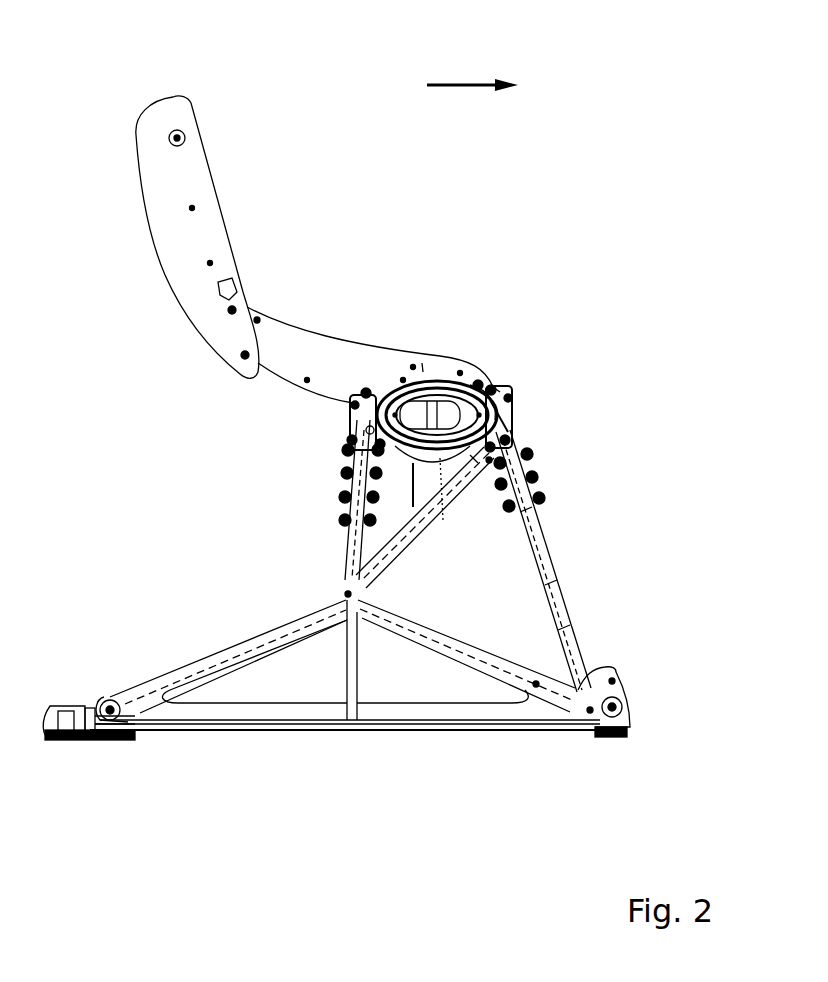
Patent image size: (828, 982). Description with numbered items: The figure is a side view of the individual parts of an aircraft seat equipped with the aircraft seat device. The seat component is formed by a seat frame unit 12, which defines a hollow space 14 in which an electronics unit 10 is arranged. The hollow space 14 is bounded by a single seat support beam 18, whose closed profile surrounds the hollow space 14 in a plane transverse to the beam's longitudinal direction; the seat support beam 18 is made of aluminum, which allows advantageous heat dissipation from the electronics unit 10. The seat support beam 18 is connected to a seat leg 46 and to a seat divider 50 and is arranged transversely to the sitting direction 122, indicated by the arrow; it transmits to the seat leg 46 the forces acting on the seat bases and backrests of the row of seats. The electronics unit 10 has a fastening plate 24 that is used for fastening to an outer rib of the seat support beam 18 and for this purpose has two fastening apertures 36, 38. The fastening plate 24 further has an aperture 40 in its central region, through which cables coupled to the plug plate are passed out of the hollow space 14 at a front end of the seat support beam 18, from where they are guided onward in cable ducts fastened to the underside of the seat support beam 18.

The sitting direction 122 is at (467, 84).
The seat divider 50 is at (228, 158).
The seat frame unit 12 is at (378, 300).
The electronics unit 10 is at (446, 381).
The seat support beam 18 is at (478, 385).
The fastening aperture 38 is at (504, 397).
The hollow space 14 is at (517, 428).
The fastening plate 24 is at (357, 405).
The fastening aperture 36 is at (353, 442).
The aperture 40 is at (344, 452).
The seat leg 46 is at (392, 740).